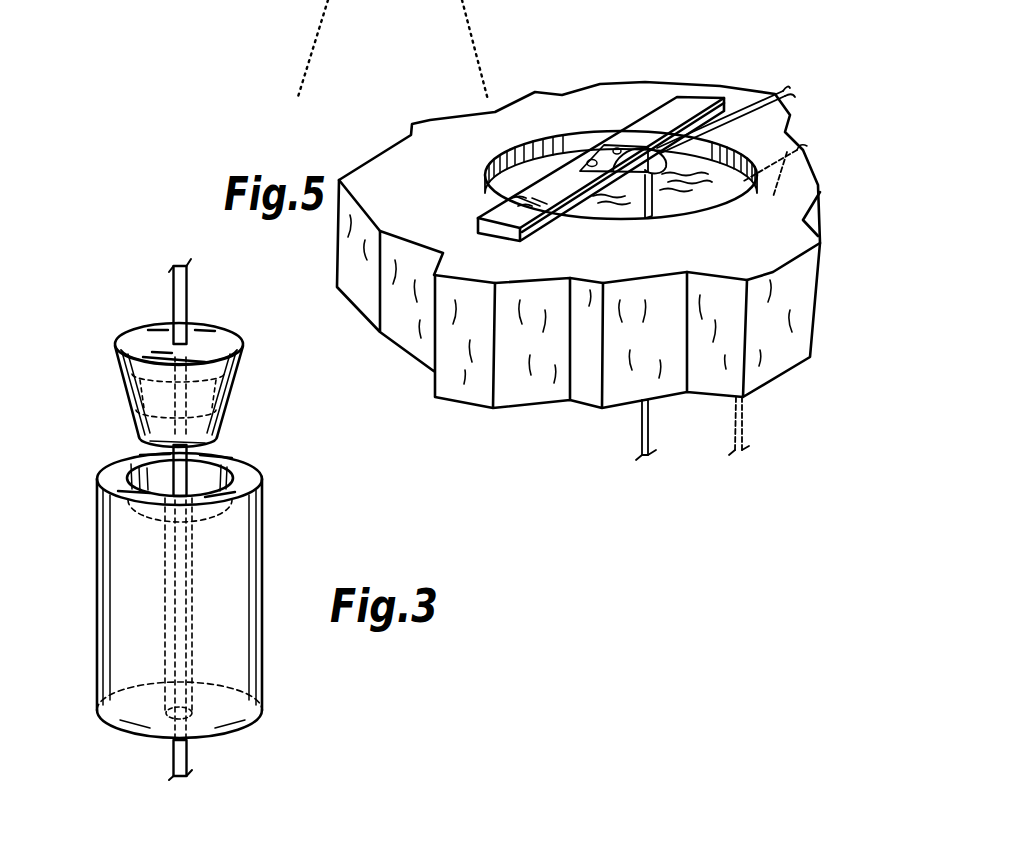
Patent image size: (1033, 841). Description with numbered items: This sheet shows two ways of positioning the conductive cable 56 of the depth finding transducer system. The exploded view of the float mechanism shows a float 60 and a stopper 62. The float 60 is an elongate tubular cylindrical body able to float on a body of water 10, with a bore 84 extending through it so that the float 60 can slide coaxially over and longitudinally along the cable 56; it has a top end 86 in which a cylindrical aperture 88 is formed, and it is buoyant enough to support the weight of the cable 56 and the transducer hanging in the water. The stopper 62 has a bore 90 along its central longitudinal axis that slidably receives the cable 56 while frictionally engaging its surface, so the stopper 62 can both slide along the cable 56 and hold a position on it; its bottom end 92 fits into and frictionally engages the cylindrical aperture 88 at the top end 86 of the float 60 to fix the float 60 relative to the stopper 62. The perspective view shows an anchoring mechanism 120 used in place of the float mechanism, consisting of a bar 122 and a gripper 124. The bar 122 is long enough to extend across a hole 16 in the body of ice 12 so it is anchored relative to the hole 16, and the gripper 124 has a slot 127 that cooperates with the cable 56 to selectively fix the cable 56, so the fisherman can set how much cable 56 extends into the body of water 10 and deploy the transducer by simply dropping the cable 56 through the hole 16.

In FIG. 5, the body of water 10 is at (578, 271).
In FIG. 5, the body of ice 12 is at (464, 169).
In FIG. 5, the hole 16 is at (563, 130).
In FIG. 3, the conductive cable 56 is at (189, 291).
In FIG. 5, the conductive cable 56 is at (765, 93).
In FIG. 3, the float 60 is at (187, 585).
In FIG. 3, the stopper 62 is at (193, 373).
In FIG. 3, the bore 84 is at (227, 692).
In FIG. 3, the top end 86 is at (115, 472).
In FIG. 3, the cylindrical aperture 88 is at (227, 478).
In FIG. 3, the bore 90 is at (185, 352).
In FIG. 3, the bottom end 92 is at (150, 443).
In FIG. 5, the anchoring mechanism 120 is at (625, 136).
In FIG. 5, the bar 122 is at (707, 100).
In FIG. 5, the gripper 124 is at (636, 152).
In FIG. 5, the slot 127 is at (627, 163).